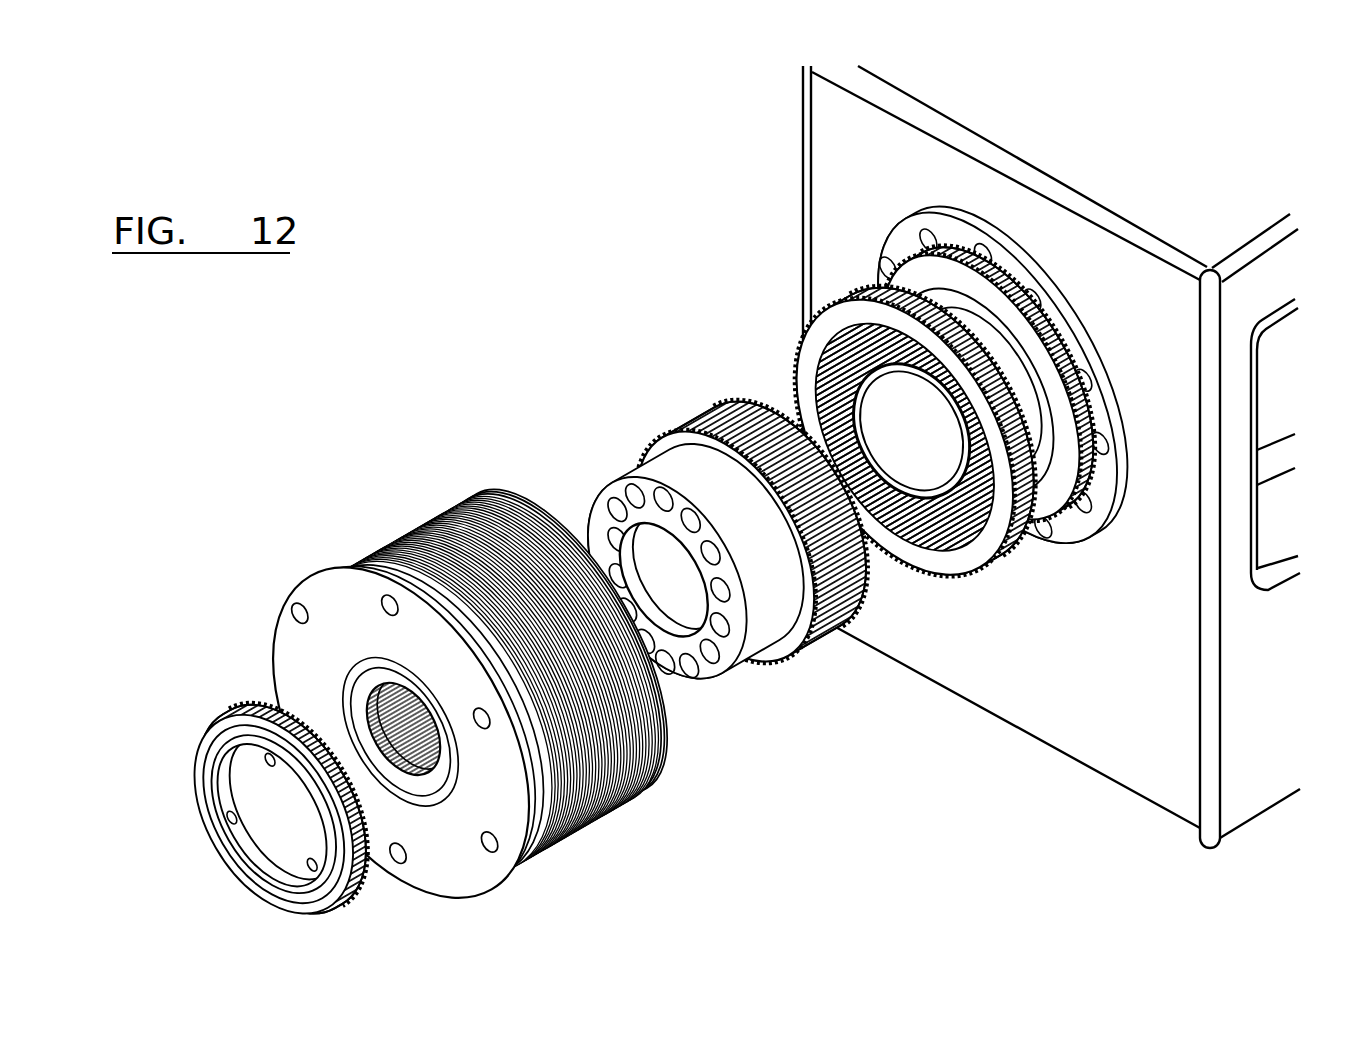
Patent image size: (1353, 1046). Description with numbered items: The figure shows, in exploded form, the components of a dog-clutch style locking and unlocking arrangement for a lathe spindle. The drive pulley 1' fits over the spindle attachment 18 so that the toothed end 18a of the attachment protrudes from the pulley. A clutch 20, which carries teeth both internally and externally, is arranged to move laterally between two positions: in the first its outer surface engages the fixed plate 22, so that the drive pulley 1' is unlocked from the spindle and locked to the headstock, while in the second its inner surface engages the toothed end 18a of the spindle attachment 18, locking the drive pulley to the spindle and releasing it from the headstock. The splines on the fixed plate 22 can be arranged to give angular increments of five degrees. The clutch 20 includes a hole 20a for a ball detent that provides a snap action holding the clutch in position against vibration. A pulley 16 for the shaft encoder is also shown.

The drive pulley 1' is at (467, 674).
The pulley for the shaft encoder 16 is at (247, 713).
The spindle attachment 18 is at (655, 437).
The toothed end of spindle attachment 18a is at (722, 410).
The clutch 20 is at (848, 280).
The hole for ball detent 20a is at (905, 545).
The fixed plate 22 is at (957, 240).